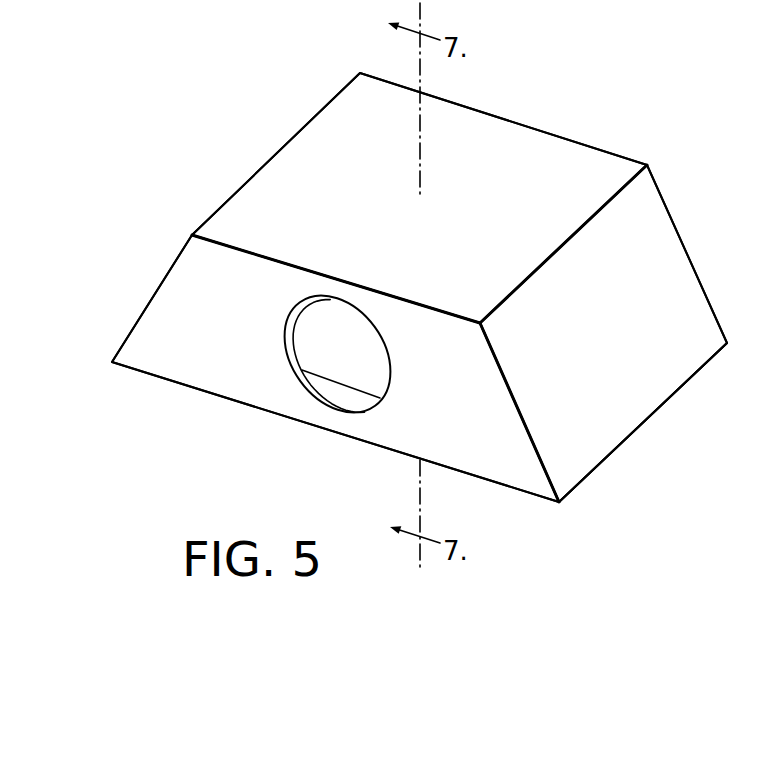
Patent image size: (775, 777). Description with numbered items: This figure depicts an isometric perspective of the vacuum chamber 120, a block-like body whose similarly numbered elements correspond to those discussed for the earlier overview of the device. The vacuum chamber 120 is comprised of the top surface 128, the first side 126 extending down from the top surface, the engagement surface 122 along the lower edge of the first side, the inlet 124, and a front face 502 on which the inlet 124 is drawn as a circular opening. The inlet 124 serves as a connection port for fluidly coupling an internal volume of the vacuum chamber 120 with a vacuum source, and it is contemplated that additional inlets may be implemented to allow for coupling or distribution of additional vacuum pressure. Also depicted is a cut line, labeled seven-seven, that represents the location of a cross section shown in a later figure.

The vacuum chamber 120 is at (443, 278).
The engagement surface 122 is at (612, 457).
The inlet 124 is at (310, 391).
The first side 126 is at (672, 276).
The top surface 128 is at (540, 158).
The front face 502 is at (214, 352).